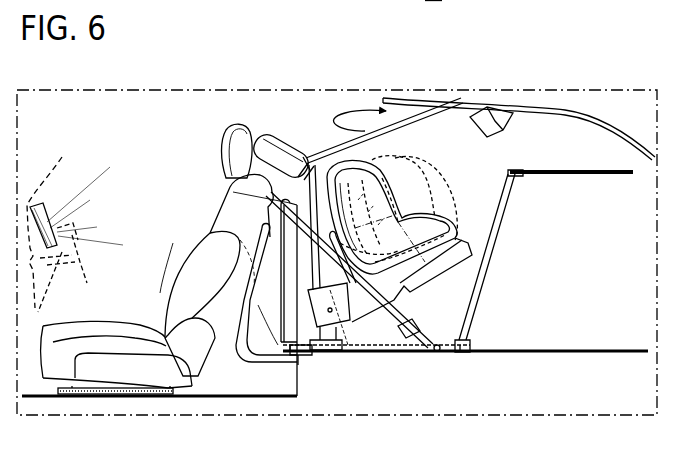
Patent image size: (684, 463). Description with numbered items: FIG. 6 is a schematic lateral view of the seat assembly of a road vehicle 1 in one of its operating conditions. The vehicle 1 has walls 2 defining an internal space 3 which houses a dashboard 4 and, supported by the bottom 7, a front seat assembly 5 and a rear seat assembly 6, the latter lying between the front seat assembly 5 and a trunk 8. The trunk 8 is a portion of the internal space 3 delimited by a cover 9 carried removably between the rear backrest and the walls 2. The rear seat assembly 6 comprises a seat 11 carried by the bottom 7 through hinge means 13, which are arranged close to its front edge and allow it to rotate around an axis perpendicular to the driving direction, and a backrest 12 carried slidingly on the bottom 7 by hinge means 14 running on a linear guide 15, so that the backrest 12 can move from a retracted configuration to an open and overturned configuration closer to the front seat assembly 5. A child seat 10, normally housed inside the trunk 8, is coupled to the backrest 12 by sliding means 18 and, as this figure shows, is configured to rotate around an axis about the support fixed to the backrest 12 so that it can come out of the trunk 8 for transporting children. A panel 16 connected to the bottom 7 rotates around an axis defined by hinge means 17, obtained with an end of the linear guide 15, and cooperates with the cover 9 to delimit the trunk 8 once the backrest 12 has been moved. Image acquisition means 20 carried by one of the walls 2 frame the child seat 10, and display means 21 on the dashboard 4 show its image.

The road vehicle 1 is at (606, 70).
The walls 2 is at (630, 142).
The internal space 3 is at (147, 207).
The dashboard 4 is at (57, 223).
The front seat assembly 5 is at (141, 126).
The rear seat assembly 6 is at (304, 120).
The bottom 7 is at (557, 352).
The trunk 8 is at (613, 263).
The cover 9 is at (597, 171).
The child seat 10 is at (458, 182).
The seat 11 is at (250, 295).
The backrest 12 is at (272, 132).
The hinge means 13 is at (302, 357).
The hinge means 14 is at (330, 345).
The linear guide 15 is at (397, 350).
The panel 16 is at (495, 250).
The hinge means 17 is at (452, 340).
The sliding means 18 is at (292, 203).
The image acquisition means 20 is at (484, 118).
The display means 21 is at (80, 207).